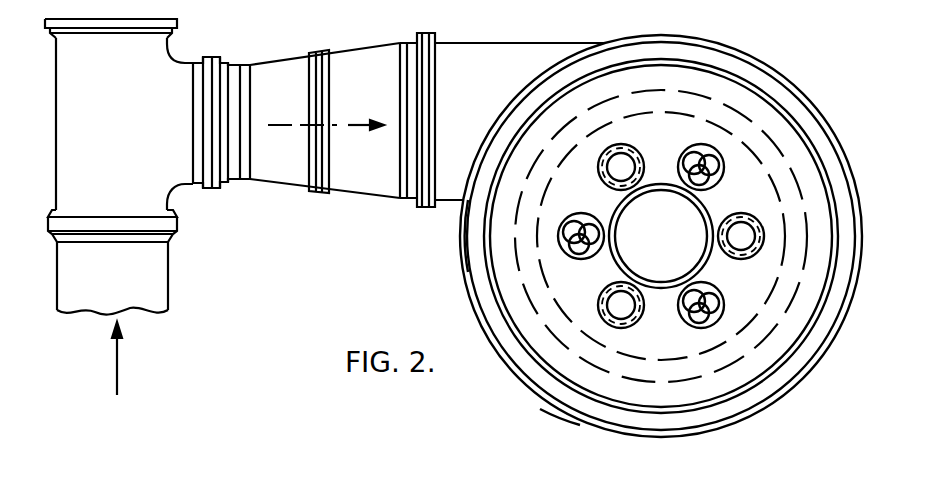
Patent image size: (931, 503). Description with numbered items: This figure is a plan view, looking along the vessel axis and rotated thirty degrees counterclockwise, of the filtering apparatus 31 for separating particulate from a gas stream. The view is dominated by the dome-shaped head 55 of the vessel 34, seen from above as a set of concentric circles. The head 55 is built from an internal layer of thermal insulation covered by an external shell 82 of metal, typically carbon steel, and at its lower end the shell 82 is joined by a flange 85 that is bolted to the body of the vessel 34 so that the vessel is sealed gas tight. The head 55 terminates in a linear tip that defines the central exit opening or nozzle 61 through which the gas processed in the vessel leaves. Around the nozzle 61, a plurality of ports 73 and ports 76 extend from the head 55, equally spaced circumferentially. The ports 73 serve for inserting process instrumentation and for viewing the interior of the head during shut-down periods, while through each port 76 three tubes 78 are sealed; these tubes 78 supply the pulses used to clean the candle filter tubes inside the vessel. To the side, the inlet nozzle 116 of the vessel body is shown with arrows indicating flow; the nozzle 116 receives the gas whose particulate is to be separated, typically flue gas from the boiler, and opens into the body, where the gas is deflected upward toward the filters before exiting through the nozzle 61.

The filtering apparatus 31 is at (849, 384).
The vessel 34 is at (790, 82).
The dome-shaped head 55 is at (520, 374).
The flange 85 is at (472, 242).
The external shell 82 is at (570, 302).
The exit opening or nozzle 61 is at (718, 262).
The ports 73 is at (748, 213).
The tubes 78 is at (592, 212).
The ports 76 is at (572, 228).
The inlet nozzle 116 is at (150, 266).